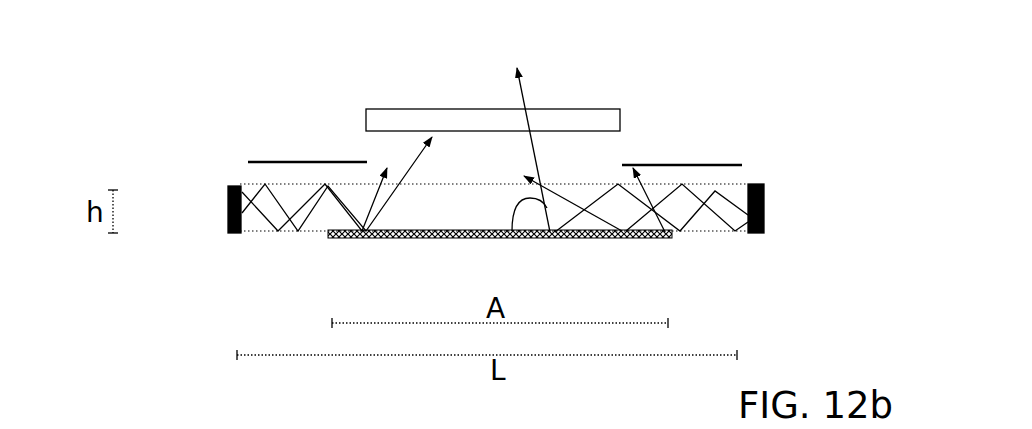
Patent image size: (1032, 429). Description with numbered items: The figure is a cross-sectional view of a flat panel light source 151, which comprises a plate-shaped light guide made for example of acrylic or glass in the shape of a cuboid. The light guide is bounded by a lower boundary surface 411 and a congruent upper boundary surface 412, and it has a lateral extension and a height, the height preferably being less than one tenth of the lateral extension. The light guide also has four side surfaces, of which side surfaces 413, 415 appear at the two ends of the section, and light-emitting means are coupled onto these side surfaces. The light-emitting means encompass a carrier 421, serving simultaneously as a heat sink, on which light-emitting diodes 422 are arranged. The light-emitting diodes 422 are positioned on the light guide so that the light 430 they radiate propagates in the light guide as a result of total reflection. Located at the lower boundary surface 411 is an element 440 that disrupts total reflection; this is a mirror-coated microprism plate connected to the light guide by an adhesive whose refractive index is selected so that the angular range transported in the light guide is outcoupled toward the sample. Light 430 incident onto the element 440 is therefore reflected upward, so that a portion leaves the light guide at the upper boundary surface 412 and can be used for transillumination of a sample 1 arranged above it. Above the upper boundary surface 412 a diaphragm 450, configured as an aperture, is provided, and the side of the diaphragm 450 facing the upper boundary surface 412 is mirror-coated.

The flat panel light source 151 is at (167, 110).
The sample 1 is at (387, 118).
The diaphragm 450 is at (687, 163).
The upper boundary surface 412 is at (724, 180).
The carrier 421 is at (228, 208).
The light-emitting diodes 422 is at (241, 187).
The side surface 415 is at (240, 228).
The side surface 413 is at (760, 233).
The lower boundary surface 411 is at (694, 239).
The light 430 is at (508, 232).
The element that disrupts total reflection 440 is at (432, 233).